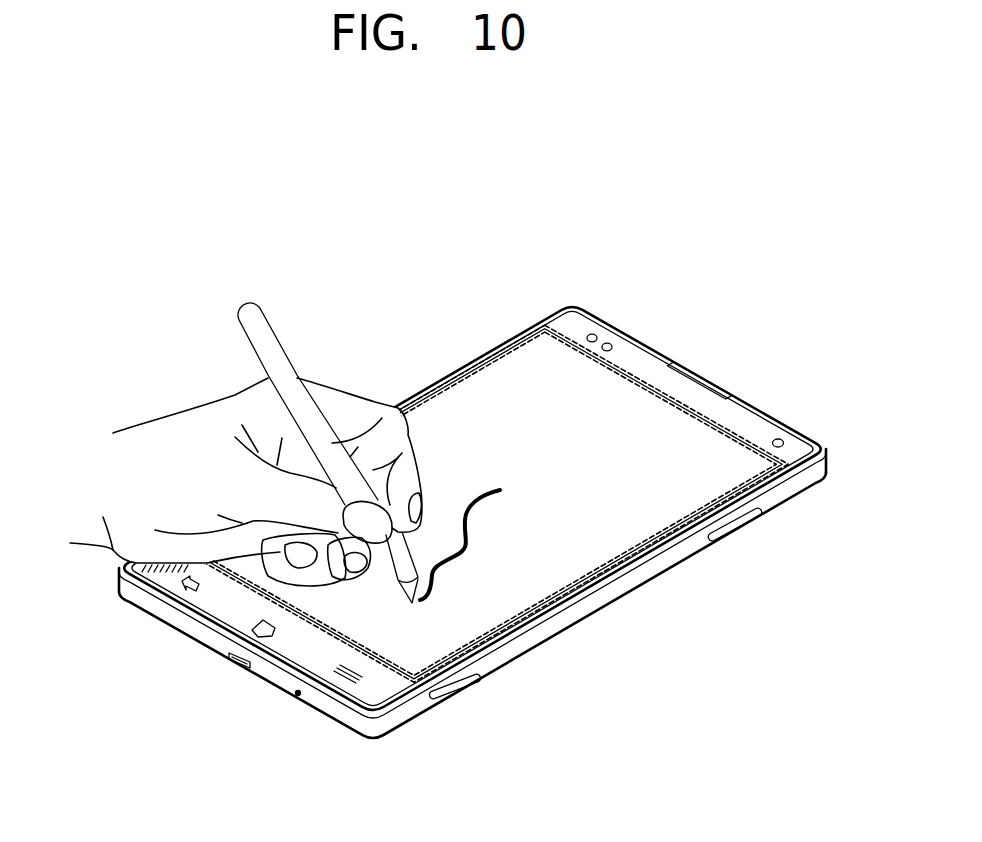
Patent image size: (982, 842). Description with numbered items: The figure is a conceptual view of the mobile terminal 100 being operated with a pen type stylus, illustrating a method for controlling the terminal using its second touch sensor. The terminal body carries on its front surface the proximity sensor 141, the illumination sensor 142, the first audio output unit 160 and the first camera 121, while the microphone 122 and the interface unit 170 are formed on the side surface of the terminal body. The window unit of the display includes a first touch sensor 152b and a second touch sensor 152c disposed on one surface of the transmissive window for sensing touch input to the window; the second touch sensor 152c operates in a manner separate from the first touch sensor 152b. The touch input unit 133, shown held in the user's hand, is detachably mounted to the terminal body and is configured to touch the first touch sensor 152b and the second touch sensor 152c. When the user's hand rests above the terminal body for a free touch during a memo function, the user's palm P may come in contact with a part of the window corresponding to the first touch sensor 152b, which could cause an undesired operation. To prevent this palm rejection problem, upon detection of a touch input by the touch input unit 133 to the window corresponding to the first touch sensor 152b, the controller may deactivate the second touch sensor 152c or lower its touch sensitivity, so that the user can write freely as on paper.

The mobile terminal 100 is at (486, 227).
The first touch sensor 152b is at (495, 395).
The second touch sensor 152c is at (633, 563).
The touch input unit 133 is at (282, 352).
The illumination sensor 142 is at (594, 334).
The proximity sensor 141 is at (611, 344).
The first audio output unit 160 is at (700, 378).
The first camera 121 is at (784, 438).
The interface unit 170 is at (230, 660).
The microphone 122 is at (296, 696).
The palm P is at (157, 557).